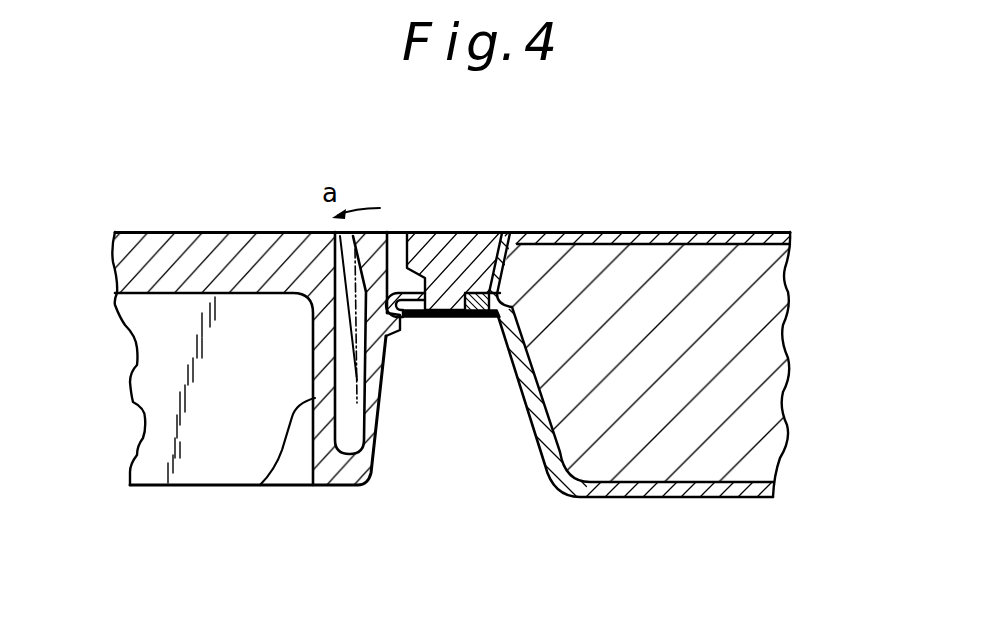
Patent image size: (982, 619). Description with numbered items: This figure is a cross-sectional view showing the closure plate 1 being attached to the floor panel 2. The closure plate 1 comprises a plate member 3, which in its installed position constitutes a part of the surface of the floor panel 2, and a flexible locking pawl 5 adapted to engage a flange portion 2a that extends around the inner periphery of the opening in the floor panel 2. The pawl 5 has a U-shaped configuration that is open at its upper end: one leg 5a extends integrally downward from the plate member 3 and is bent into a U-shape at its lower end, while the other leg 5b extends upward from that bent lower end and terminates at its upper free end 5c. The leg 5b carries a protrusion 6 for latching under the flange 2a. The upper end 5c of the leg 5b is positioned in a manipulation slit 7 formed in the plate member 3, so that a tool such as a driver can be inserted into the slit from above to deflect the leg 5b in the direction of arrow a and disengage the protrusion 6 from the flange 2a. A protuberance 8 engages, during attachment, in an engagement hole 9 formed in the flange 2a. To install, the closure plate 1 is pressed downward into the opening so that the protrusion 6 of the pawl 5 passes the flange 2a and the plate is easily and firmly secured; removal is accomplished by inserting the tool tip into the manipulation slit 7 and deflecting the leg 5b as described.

The closure plate 1 is at (211, 232).
The floor panel 2 is at (793, 288).
The flange portion 2a is at (497, 321).
The plate member 3 is at (127, 241).
The locking pawl 5 is at (345, 494).
The leg 5a is at (260, 486).
The leg 5b is at (383, 428).
The upper free end 5c is at (378, 233).
The protrusion 6 is at (395, 338).
The manipulation slit 7 is at (399, 240).
The protuberance 8 is at (454, 320).
The engagement hole 9 is at (431, 319).